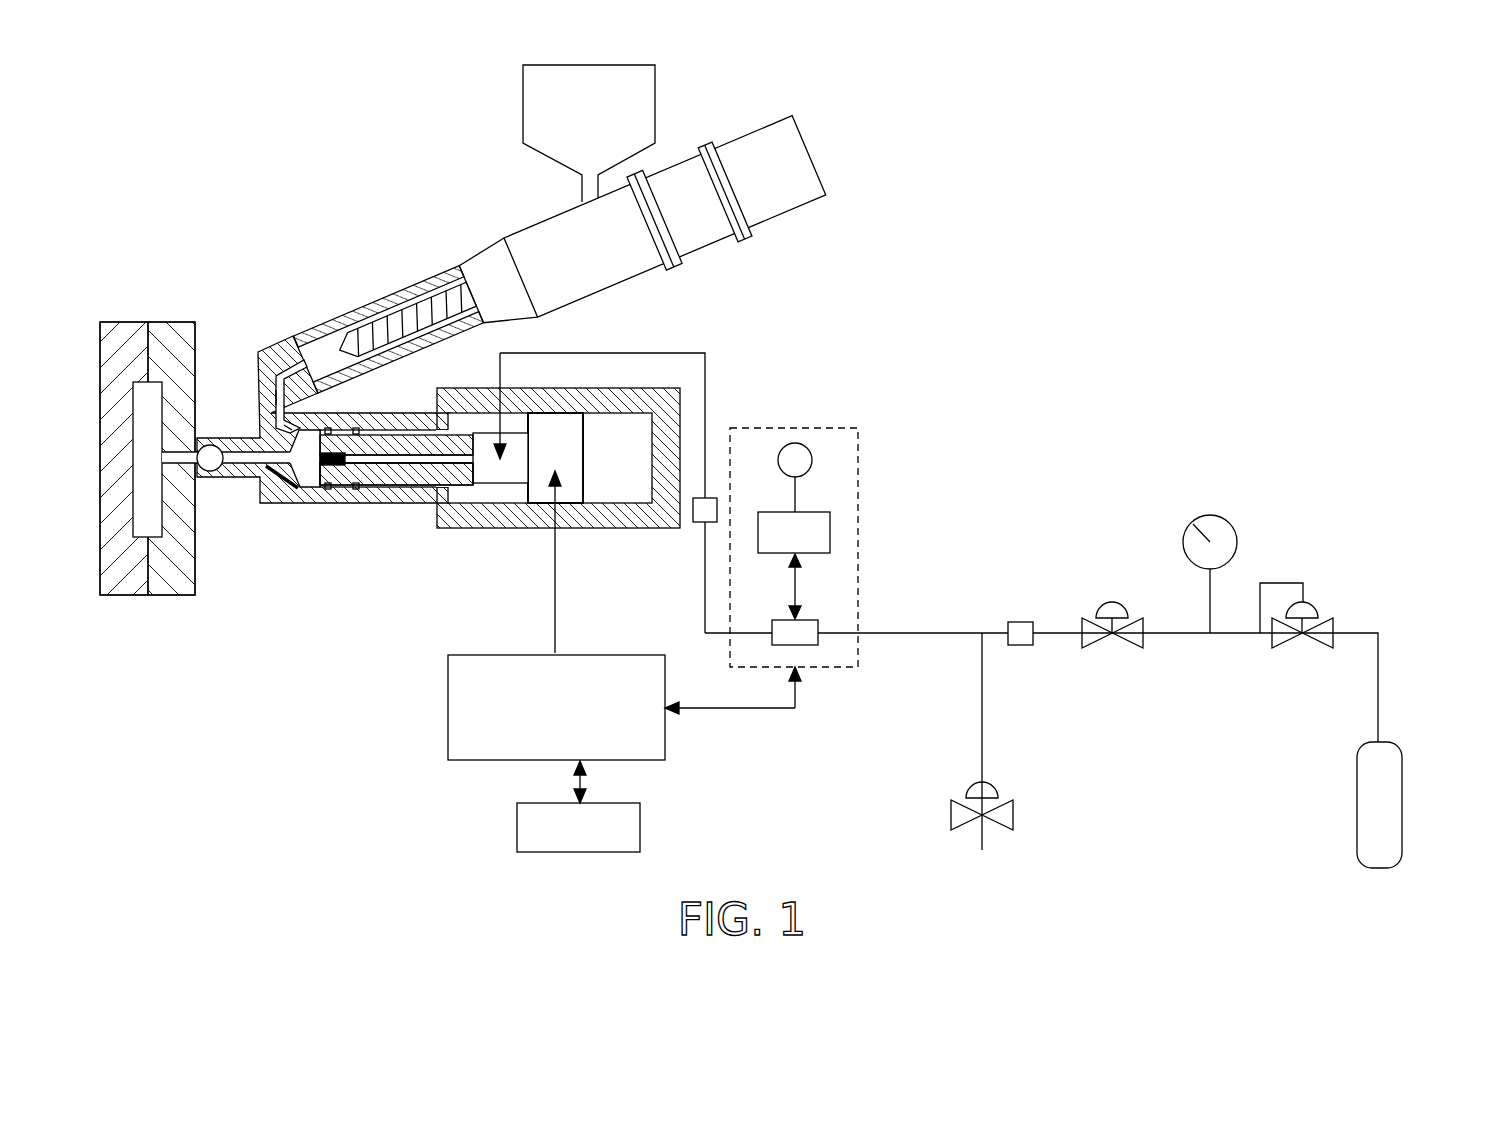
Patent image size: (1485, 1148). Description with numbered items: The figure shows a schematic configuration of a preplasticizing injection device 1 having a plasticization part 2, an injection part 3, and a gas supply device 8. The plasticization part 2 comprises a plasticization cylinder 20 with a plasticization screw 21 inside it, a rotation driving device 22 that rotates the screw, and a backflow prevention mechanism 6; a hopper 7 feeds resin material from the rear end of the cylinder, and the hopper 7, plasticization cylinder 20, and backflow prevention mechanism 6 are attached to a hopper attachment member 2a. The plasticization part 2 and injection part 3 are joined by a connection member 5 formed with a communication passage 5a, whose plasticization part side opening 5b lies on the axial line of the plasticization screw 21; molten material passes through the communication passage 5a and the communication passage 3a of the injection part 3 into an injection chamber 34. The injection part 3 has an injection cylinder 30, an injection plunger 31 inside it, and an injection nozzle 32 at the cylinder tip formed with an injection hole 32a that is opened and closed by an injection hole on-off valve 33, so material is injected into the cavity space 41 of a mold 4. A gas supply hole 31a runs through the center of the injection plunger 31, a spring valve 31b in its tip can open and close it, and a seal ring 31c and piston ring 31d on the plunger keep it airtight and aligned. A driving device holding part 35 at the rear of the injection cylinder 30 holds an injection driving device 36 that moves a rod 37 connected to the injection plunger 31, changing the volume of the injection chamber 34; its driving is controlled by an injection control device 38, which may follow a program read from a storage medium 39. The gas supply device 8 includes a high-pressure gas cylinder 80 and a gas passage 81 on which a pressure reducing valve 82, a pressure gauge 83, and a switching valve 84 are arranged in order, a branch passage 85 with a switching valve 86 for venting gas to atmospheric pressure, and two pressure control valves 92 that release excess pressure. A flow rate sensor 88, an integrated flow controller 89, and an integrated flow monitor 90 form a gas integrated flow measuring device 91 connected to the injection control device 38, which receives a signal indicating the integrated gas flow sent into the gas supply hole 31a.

The preplasticizing injection device 1 is at (971, 138).
The plasticization part 2 is at (384, 262).
The hopper attachment member 2a is at (610, 262).
The injection part 3 is at (318, 640).
The communication passage 3a is at (281, 435).
The mold 4 is at (139, 300).
The connection member 5 is at (266, 323).
The communication passage 5a is at (272, 398).
The plasticization part side opening 5b is at (300, 376).
The backflow prevention mechanism 6 is at (677, 178).
The hopper 7 is at (528, 102).
The gas supply device 8 is at (1066, 410).
The plasticization cylinder 20 is at (350, 312).
The plasticization screw 21 is at (405, 310).
The rotation driving device 22 is at (752, 147).
The injection cylinder 30 is at (420, 506).
The injection plunger 31 is at (348, 440).
The gas supply hole 31a is at (412, 458).
The spring valve 31b is at (360, 492).
The seal ring 31c is at (328, 493).
The piston ring 31d is at (357, 493).
The injection nozzle 32 is at (247, 484).
The injection hole 32a is at (268, 478).
The injection hole on-off valve 33 is at (212, 472).
The injection chamber 34 is at (318, 482).
The driving device holding part 35 is at (622, 530).
The injection driving device 36 is at (540, 485).
The rod 37 is at (490, 476).
The injection control device 38 is at (470, 762).
The storage medium 39 is at (640, 828).
The cavity space 41 is at (150, 540).
The high-pressure gas cylinder 80 is at (1402, 787).
The gas passage 81 is at (918, 632).
The pressure reducing valve 82 is at (1330, 620).
The pressure gauge 83 is at (1225, 517).
The switching valve 84 is at (1085, 622).
The branch passage 85 is at (983, 712).
The switching valve 86 is at (995, 785).
The flow rate sensor 88 is at (808, 620).
The integrated flow controller 89 is at (825, 515).
The integrated flow monitor 90 is at (812, 457).
The gas integrated flow measuring device 91 is at (830, 668).
The pressure control valve 92 is at (710, 497).